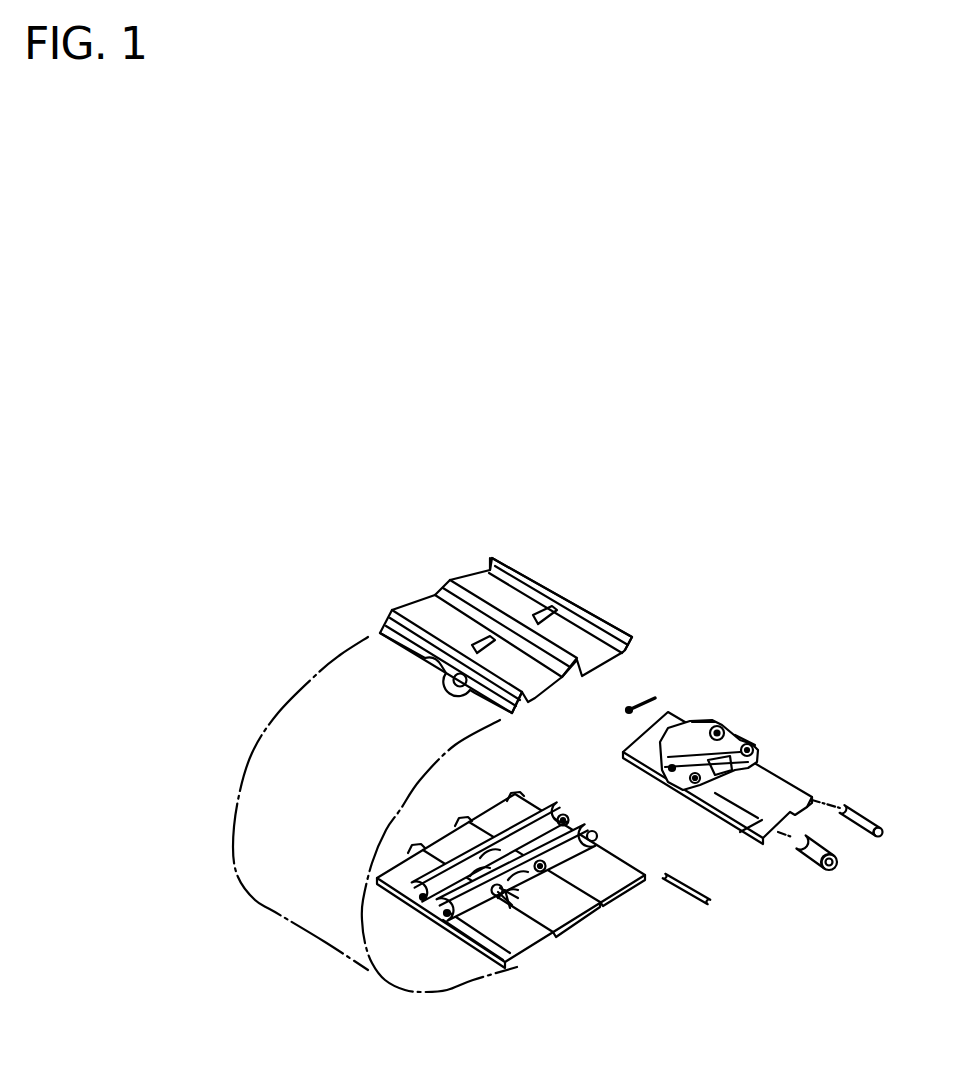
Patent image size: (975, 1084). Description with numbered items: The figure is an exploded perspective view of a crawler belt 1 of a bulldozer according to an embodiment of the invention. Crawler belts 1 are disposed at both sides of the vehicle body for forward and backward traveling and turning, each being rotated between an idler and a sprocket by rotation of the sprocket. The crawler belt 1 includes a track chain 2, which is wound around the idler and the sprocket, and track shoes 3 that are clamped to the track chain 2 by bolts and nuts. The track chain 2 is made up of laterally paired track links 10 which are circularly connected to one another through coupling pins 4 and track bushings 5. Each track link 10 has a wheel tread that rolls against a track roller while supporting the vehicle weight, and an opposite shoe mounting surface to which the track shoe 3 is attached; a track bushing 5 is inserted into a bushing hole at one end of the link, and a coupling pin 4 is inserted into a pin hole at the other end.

The crawler belt 1 is at (438, 592).
The track chain 2 is at (507, 898).
The track shoe 3 is at (673, 723).
The coupling pin 4 is at (863, 813).
The track bushing 5 is at (828, 865).
The track link 10 is at (757, 740).